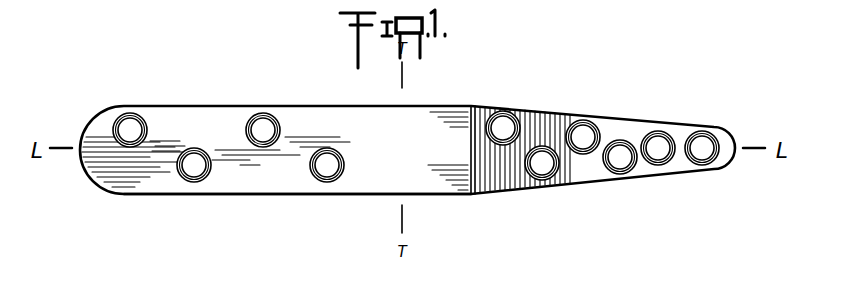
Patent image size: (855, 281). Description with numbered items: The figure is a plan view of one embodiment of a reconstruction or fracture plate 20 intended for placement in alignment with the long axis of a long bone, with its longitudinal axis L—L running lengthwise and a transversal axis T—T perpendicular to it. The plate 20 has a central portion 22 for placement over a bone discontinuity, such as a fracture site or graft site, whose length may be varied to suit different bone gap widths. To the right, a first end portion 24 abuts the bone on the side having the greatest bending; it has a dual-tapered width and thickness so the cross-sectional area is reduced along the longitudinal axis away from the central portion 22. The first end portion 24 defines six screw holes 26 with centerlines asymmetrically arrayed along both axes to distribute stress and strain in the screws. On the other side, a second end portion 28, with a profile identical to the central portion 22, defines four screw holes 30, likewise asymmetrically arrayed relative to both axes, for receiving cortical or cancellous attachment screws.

The reconstruction or fracture plate 20 is at (446, 97).
The central portion 22 is at (447, 197).
The first end portion 24 is at (628, 119).
The screw holes 26 is at (507, 126).
The second end portion 28 is at (238, 197).
The screw holes 30 is at (135, 128).